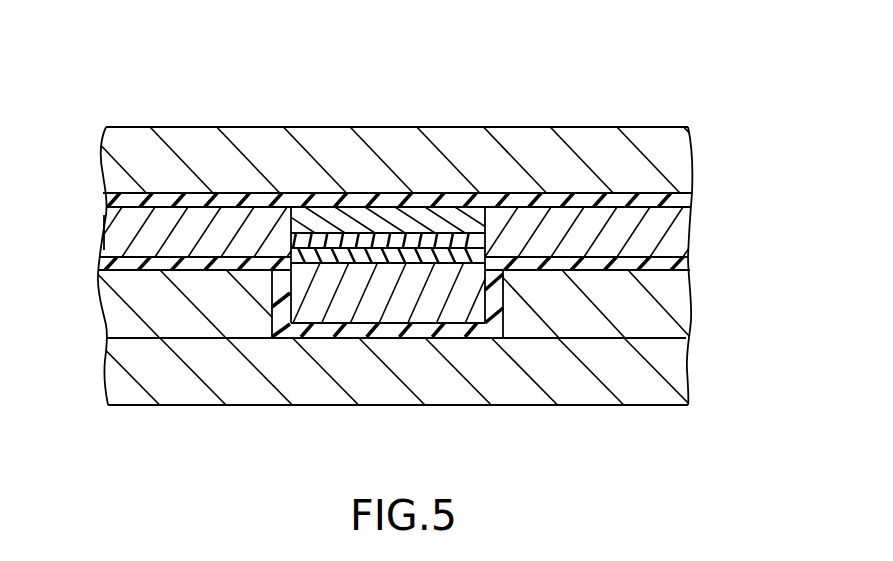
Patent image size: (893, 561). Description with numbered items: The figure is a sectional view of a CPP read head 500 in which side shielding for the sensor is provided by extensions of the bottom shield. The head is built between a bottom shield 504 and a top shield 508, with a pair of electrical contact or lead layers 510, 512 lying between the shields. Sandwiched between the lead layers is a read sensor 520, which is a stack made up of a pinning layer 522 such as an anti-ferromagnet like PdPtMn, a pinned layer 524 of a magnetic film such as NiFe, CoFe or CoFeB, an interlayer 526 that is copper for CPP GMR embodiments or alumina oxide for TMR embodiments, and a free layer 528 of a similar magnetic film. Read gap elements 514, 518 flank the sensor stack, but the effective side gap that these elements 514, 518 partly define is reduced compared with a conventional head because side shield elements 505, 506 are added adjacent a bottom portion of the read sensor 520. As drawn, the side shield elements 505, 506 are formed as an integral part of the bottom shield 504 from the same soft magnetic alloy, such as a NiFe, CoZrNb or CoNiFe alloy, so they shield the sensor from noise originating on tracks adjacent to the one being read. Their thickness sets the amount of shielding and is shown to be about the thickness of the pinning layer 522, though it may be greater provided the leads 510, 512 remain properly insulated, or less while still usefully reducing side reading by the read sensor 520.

The CPP read head 500 is at (95, 95).
The bottom shield 504 is at (680, 385).
The side shield element 505 is at (670, 312).
The side shield element 506 is at (114, 311).
The top shield 508 is at (681, 136).
The electrical lead layer 510 is at (668, 262).
The electrical lead layer 512 is at (684, 194).
The read gap element 514 is at (674, 223).
The read gap element 518 is at (118, 222).
The read sensor 520 is at (290, 338).
The pinning layer 522 is at (335, 312).
The pinned layer 524 is at (361, 257).
The interlayer 526 is at (400, 238).
The free layer 528 is at (430, 215).